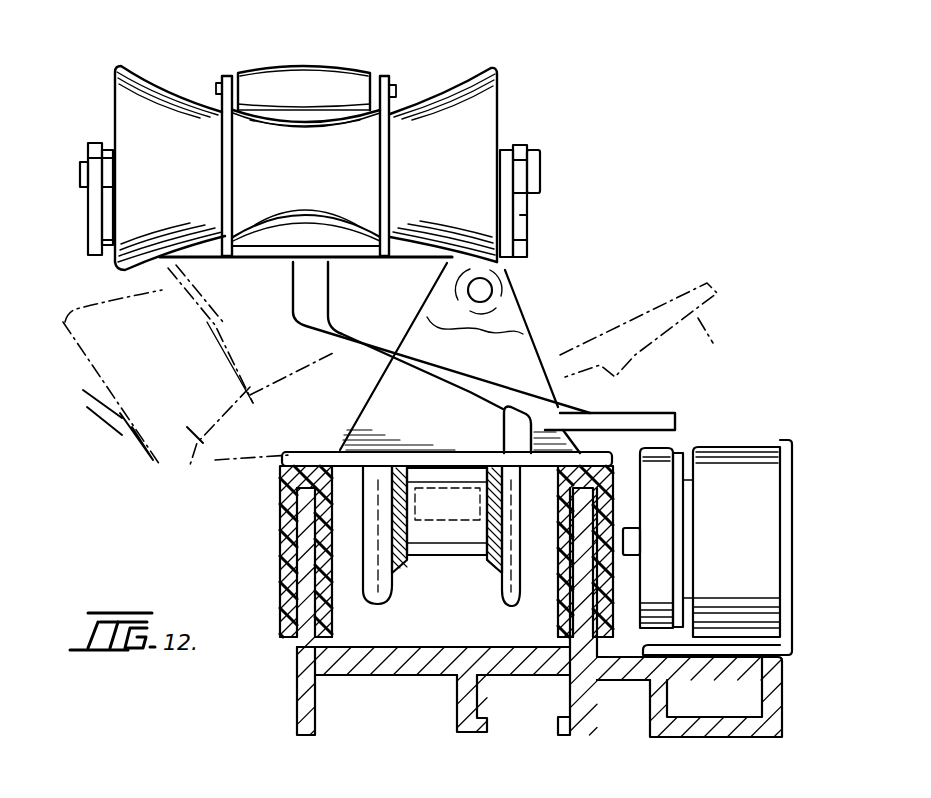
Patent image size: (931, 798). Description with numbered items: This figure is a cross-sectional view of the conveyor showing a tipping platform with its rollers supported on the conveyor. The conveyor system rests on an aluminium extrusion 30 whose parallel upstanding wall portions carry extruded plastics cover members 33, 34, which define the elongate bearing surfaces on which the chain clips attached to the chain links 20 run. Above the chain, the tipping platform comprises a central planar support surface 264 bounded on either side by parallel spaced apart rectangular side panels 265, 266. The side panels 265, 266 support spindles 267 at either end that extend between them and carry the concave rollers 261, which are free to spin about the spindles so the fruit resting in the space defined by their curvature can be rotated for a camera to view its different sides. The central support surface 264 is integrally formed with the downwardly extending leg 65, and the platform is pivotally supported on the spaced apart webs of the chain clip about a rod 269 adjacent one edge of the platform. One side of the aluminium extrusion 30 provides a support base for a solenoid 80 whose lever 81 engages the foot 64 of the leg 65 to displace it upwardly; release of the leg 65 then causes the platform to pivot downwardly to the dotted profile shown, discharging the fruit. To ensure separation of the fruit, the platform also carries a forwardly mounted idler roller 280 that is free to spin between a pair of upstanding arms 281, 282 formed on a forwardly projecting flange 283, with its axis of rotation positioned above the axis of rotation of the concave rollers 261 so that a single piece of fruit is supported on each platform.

The concave roller 261 is at (156, 94).
The central planar support surface 264 is at (211, 256).
The side panel 265 is at (520, 223).
The side panel 266 is at (95, 143).
The spindle 267 is at (540, 160).
The rod 269 is at (492, 297).
The idler roller 280 is at (301, 82).
The upstanding arm 281 is at (227, 76).
The upstanding arm 282 is at (387, 75).
The forwardly projecting flange 283 is at (305, 248).
The downwardly extending leg 65 is at (350, 338).
The foot 64 is at (668, 412).
The cover member 33 is at (293, 540).
The cover member 34 is at (566, 563).
The chain link 20 is at (445, 548).
The aluminium extrusion 30 is at (418, 660).
The solenoid 80 is at (765, 545).
The lever 81 is at (664, 572).